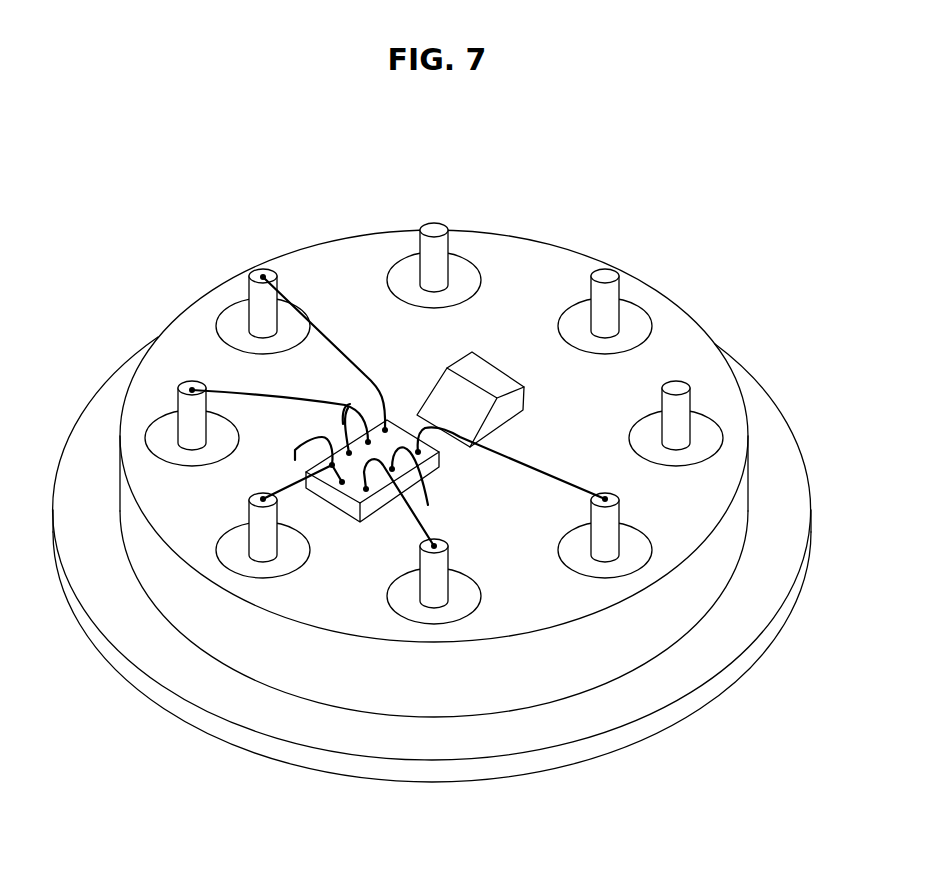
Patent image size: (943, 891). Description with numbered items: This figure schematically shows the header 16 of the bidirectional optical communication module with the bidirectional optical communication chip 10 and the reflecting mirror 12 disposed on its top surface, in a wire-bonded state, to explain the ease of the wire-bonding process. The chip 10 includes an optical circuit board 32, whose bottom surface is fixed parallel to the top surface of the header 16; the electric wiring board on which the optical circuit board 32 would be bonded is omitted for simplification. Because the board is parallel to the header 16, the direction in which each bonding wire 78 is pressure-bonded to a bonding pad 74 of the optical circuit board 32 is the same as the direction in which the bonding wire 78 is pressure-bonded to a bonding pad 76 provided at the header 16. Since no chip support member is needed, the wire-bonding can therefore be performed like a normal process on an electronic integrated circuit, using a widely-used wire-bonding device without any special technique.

The bidirectional optical communication chip 10 is at (345, 487).
The reflecting mirror 12 is at (490, 380).
The header 16 is at (683, 343).
The optical circuit board 32 is at (337, 500).
The bonding pad 74 is at (370, 497).
The bonding pad 76 is at (437, 547).
The bonding wire 78 is at (423, 518).